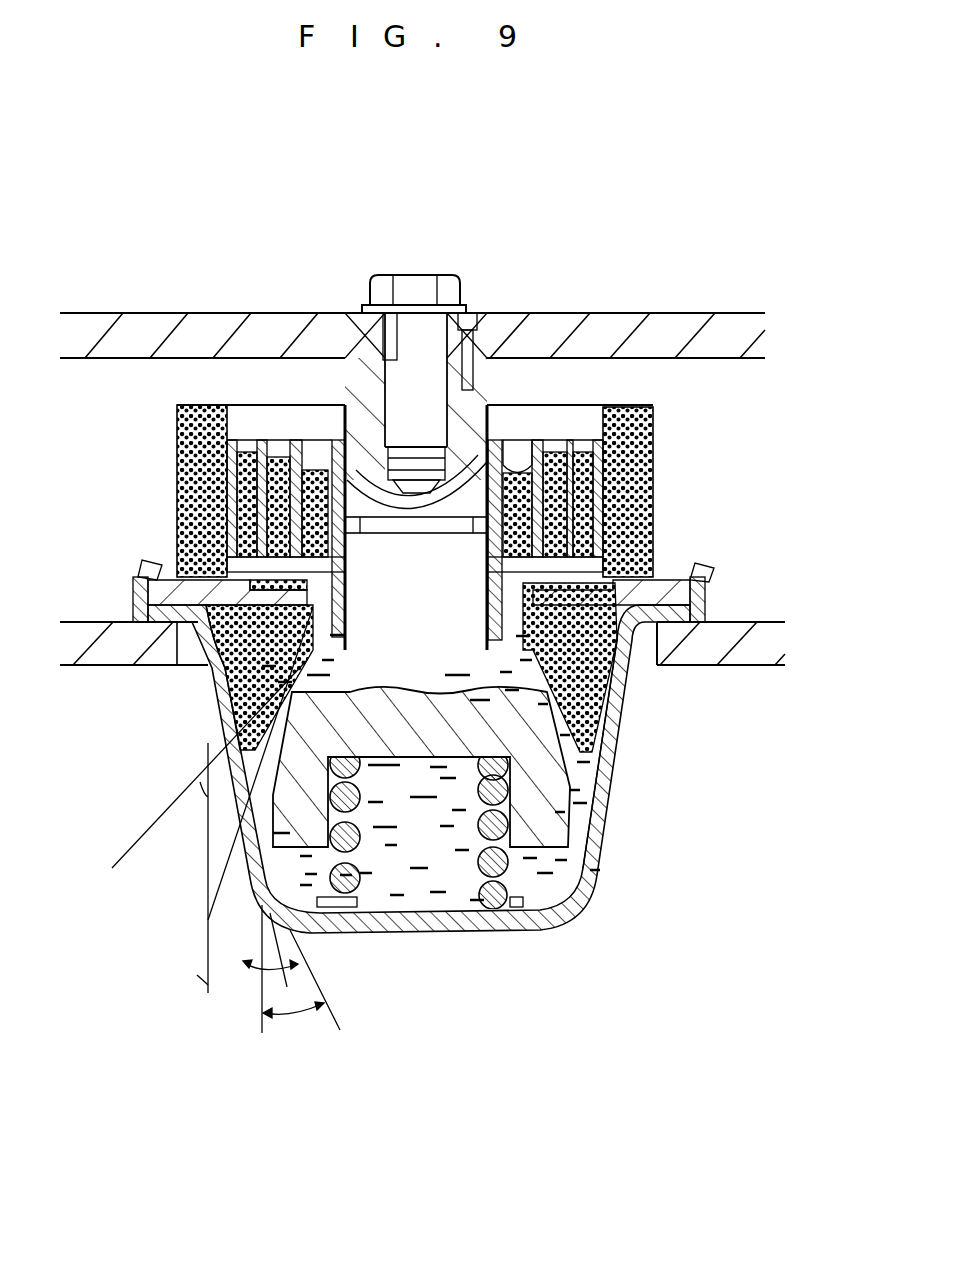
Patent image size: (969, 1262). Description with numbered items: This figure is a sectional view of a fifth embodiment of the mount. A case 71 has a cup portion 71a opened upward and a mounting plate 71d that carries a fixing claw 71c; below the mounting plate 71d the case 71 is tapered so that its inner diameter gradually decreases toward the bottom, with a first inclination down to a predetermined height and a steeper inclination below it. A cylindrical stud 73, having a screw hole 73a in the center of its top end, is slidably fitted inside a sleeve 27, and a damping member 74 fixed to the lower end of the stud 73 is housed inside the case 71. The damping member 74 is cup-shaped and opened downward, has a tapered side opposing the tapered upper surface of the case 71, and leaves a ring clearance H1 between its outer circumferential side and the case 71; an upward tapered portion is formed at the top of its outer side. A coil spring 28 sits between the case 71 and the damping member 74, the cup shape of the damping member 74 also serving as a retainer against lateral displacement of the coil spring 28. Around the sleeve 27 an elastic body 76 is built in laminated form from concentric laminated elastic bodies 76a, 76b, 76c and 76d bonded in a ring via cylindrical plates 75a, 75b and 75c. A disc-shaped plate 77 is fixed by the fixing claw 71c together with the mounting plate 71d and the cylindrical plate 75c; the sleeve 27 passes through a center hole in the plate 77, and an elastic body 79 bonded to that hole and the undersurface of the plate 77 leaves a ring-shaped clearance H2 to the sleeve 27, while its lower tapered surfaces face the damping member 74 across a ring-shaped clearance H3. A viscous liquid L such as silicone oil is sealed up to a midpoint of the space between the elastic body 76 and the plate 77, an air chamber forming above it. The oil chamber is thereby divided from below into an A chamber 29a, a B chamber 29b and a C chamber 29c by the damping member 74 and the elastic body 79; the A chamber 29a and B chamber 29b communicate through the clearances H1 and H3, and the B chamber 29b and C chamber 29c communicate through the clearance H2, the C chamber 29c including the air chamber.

The screw hole 73a is at (398, 355).
The stud 73 is at (358, 380).
The sleeve 27 is at (660, 513).
The elastic body 76 is at (668, 458).
The laminated elastic body 76a is at (310, 470).
The laminated elastic body 76b is at (268, 450).
The laminated elastic body 76c is at (182, 420).
The laminated elastic body 76d is at (177, 438).
The cylindrical plate 75a is at (543, 443).
The cylindrical plate 75b is at (570, 437).
The cylindrical plate 75c is at (657, 427).
The C chamber 29c is at (230, 550).
The elastic body 79 is at (247, 712).
The B chamber 29b is at (540, 670).
The fixing claw 71c is at (145, 560).
The plate 77 is at (702, 572).
The case 71 is at (597, 850).
The cup portion 71a is at (608, 778).
The mounting plate 71d is at (675, 630).
The damping member 74 is at (530, 818).
The coil spring 28 is at (470, 870).
The A chamber 29a is at (407, 870).
The ring clearance H1 is at (590, 850).
The ring-shaped clearance H2 is at (310, 627).
The ring-shaped clearance H3 is at (573, 743).
The viscous liquid L is at (530, 886).